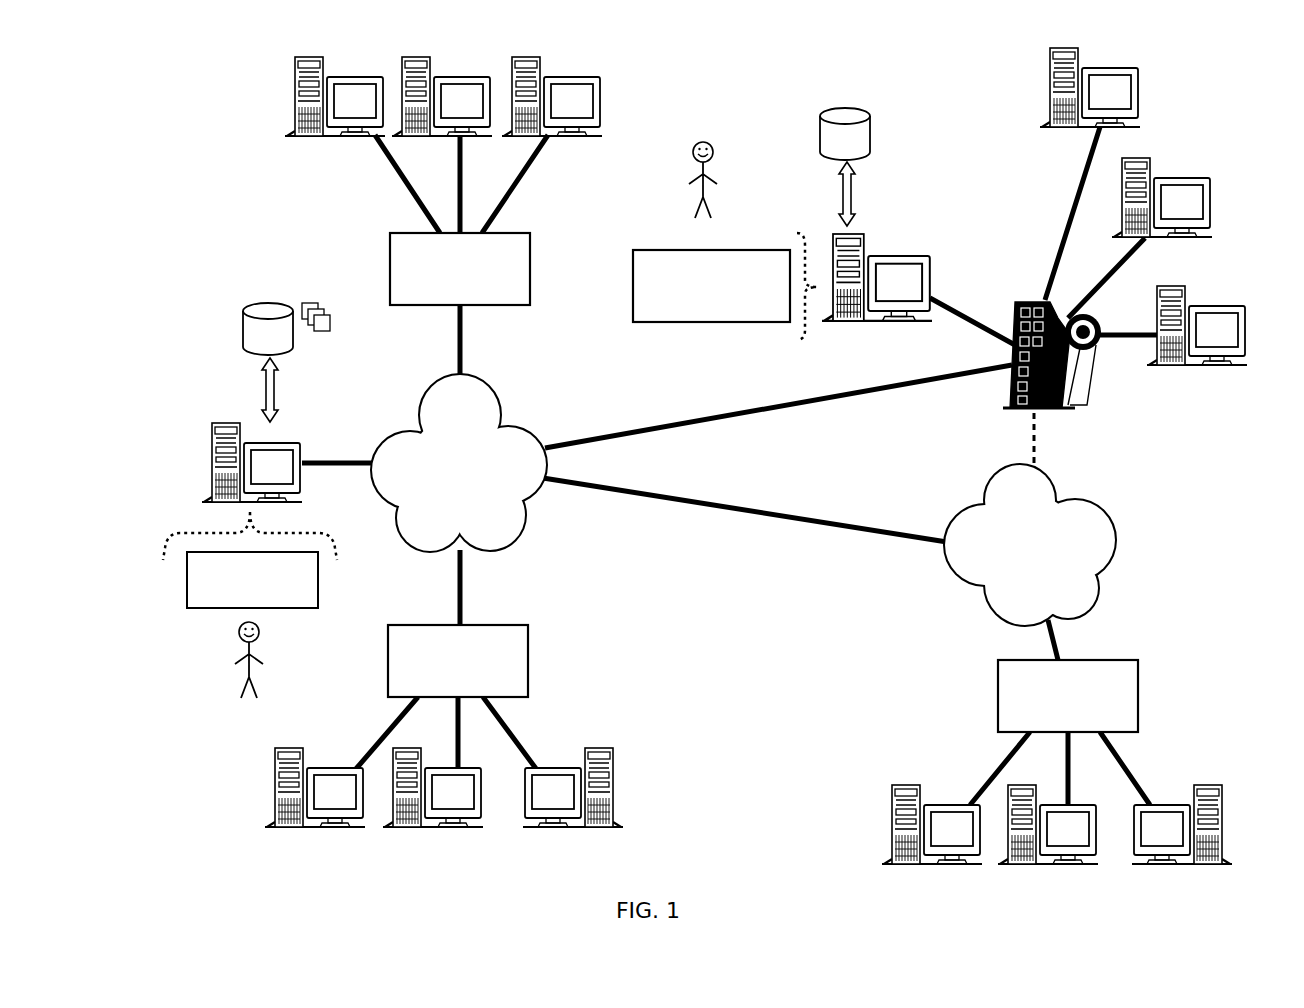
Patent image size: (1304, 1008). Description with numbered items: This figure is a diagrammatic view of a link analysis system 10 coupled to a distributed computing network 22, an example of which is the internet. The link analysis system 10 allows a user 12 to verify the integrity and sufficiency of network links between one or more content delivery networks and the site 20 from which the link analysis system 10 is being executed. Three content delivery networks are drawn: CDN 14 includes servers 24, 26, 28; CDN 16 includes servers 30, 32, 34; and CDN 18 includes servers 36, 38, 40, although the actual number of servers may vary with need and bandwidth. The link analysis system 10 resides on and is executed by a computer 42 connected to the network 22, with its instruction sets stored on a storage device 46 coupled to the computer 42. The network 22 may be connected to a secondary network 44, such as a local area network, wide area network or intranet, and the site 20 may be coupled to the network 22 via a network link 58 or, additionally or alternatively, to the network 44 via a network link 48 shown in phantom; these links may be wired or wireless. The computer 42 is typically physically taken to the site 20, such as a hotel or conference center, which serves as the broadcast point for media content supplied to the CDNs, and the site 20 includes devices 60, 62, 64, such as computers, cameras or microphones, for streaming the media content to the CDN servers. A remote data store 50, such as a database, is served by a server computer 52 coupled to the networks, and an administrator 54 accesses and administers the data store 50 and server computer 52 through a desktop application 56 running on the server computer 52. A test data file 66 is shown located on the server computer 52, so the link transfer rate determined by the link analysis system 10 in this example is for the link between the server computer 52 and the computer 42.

The link analysis system 10 is at (633, 266).
The user 12 is at (727, 163).
The CDN 14 is at (390, 268).
The CDN 16 is at (530, 660).
The CDN 18 is at (1140, 678).
The site 20 is at (1070, 405).
The distributed computing network 22 is at (415, 400).
The server 24 is at (296, 60).
The server 26 is at (403, 60).
The server 28 is at (513, 60).
The server 30 is at (276, 762).
The server 32 is at (483, 782).
The server 34 is at (587, 758).
The server 36 is at (892, 802).
The server 38 is at (1100, 820).
The server 40 is at (1222, 820).
The computer 42 is at (865, 242).
The secondary network 44 is at (1115, 527).
The storage device 46 is at (820, 132).
The network link 48 is at (1028, 428).
The remote data store 50 is at (243, 325).
The server computer 52 is at (214, 445).
The administrator 54 is at (272, 642).
The desktop application 56 is at (325, 590).
The network link 58 is at (692, 418).
The device 60 is at (1143, 88).
The device 62 is at (1212, 198).
The device 64 is at (1247, 327).
The test data file 66 is at (332, 325).